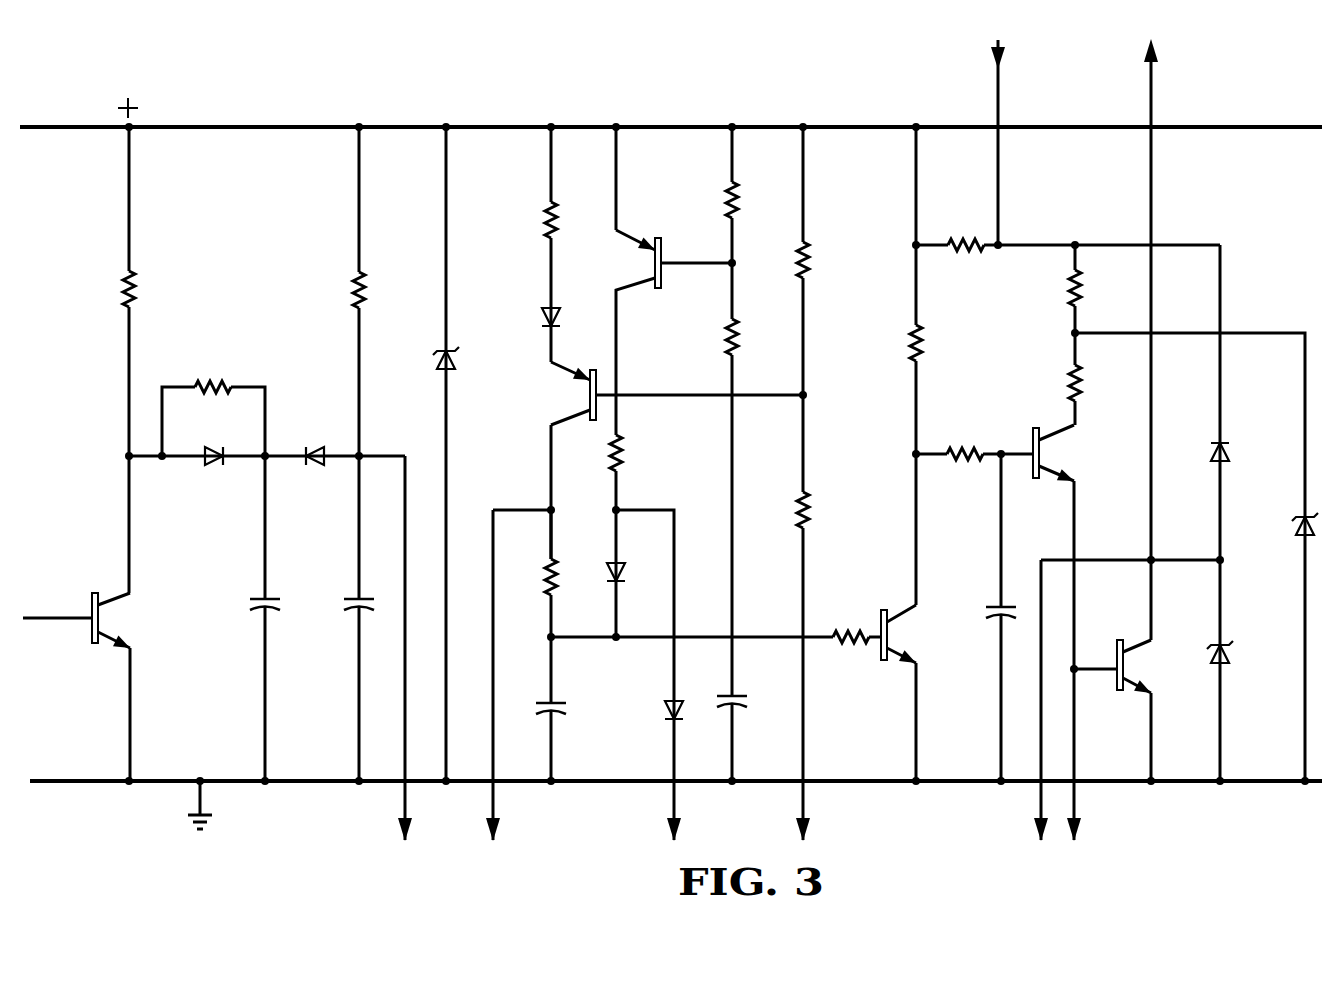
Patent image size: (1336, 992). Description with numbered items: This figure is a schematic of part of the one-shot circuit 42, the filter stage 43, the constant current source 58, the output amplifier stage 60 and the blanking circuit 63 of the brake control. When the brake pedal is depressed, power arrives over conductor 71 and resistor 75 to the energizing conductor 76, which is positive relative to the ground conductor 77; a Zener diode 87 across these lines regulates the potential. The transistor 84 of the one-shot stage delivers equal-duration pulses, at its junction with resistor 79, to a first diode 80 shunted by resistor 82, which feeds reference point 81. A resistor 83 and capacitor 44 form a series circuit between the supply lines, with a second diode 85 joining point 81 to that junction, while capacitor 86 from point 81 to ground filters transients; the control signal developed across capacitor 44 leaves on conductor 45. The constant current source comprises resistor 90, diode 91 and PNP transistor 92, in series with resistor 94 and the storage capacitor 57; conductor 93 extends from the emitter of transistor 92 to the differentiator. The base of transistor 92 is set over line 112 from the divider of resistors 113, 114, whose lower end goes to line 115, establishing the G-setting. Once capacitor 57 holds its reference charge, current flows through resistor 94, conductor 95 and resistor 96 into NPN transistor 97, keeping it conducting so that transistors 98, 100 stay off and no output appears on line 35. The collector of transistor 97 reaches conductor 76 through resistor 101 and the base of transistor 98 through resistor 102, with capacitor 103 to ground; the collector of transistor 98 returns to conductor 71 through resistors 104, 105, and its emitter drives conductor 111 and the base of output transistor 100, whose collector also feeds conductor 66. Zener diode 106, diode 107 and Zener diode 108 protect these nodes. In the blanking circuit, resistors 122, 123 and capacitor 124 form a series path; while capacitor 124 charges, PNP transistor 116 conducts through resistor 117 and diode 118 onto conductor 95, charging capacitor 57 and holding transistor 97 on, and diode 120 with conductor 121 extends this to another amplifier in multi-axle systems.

The output line 35 is at (1152, 85).
The one-shot circuit 42 is at (78, 553).
The filter stage 43 is at (258, 322).
The capacitor 44 is at (345, 689).
The conductor 45 is at (405, 807).
The capacitor 57 is at (537, 739).
The constant current source 58 is at (530, 297).
The output amplifier stage 60 is at (979, 522).
The blanking circuit 63 is at (671, 374).
The conductor 66 is at (1040, 802).
The conductor 71 is at (998, 85).
The resistor 75 is at (1068, 233).
The energizing conductor 76 is at (853, 131).
The ground conductor 77 is at (861, 786).
The resistor 79 is at (145, 291).
The first diode 80 is at (211, 445).
The reference point 81 is at (267, 460).
The resistor 82 is at (213, 407).
The resistor 83 is at (344, 363).
The transistor 84 is at (126, 620).
The second diode 85 is at (311, 441).
The capacitor 86 is at (246, 689).
The Zener diode 87 is at (450, 350).
The resistor 90 is at (567, 213).
The diode 91 is at (568, 331).
The PNP transistor 92 is at (567, 393).
The conductor 93 is at (494, 801).
The resistor 94 is at (537, 552).
The conductor 95 is at (758, 633).
The resistor 96 is at (849, 625).
The NPN transistor 97 is at (906, 634).
The NPN transistor 98 is at (1064, 453).
The output transistor 100 is at (1125, 710).
The resistor 101 is at (940, 343).
The resistor 102 is at (974, 443).
The capacitor 103 is at (981, 617).
The resistor 104 is at (1098, 379).
The resistor 105 is at (1098, 289).
The Zener diode 106 is at (1243, 670).
The diode 107 is at (1245, 402).
The Zener diode 108 is at (1196, 557).
The conductor 111 is at (1076, 800).
The line 112 is at (703, 397).
The resistor 113 is at (826, 261).
The resistor 114 is at (827, 588).
The line 115 is at (803, 808).
The PNP transistor 116 is at (663, 259).
The resistor 117 is at (641, 472).
The diode 118 is at (639, 573).
The diode 120 is at (649, 645).
The conductor 121 is at (672, 807).
The resistor 122 is at (712, 195).
The resistor 123 is at (714, 479).
The capacitor 124 is at (757, 737).